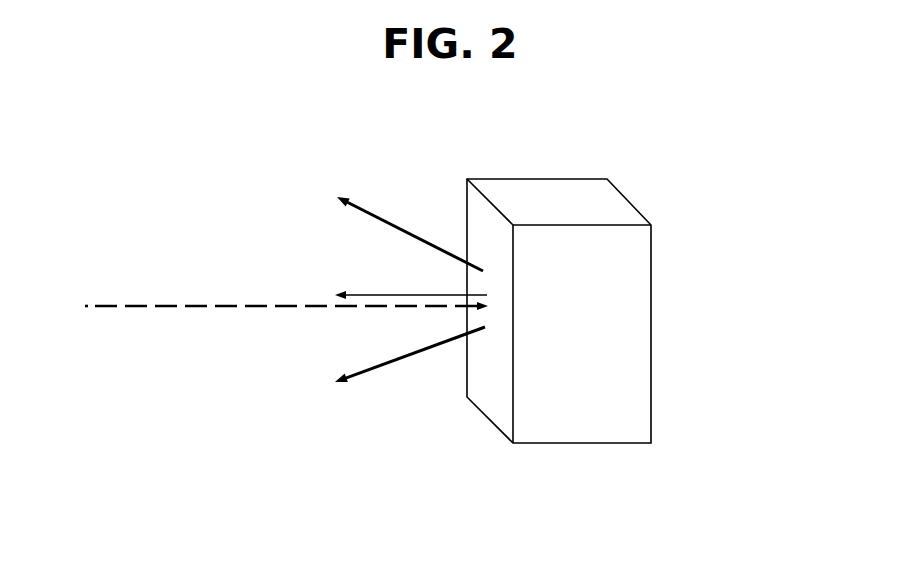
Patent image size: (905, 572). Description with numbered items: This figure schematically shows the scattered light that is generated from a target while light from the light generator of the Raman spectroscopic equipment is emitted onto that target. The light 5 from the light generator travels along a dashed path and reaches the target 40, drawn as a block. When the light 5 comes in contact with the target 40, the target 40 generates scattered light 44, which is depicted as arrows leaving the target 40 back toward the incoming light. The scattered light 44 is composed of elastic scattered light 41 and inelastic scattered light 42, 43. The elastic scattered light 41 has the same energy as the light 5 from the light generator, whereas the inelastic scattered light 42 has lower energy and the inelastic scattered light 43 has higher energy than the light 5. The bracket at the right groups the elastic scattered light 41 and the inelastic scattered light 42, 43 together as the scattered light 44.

The light 5 is at (137, 306).
The target 40 is at (640, 262).
The elastic scattered light 41 is at (380, 293).
The inelastic scattered light 42 is at (382, 367).
The inelastic scattered light 43 is at (385, 223).
The scattered light 44 is at (769, 423).